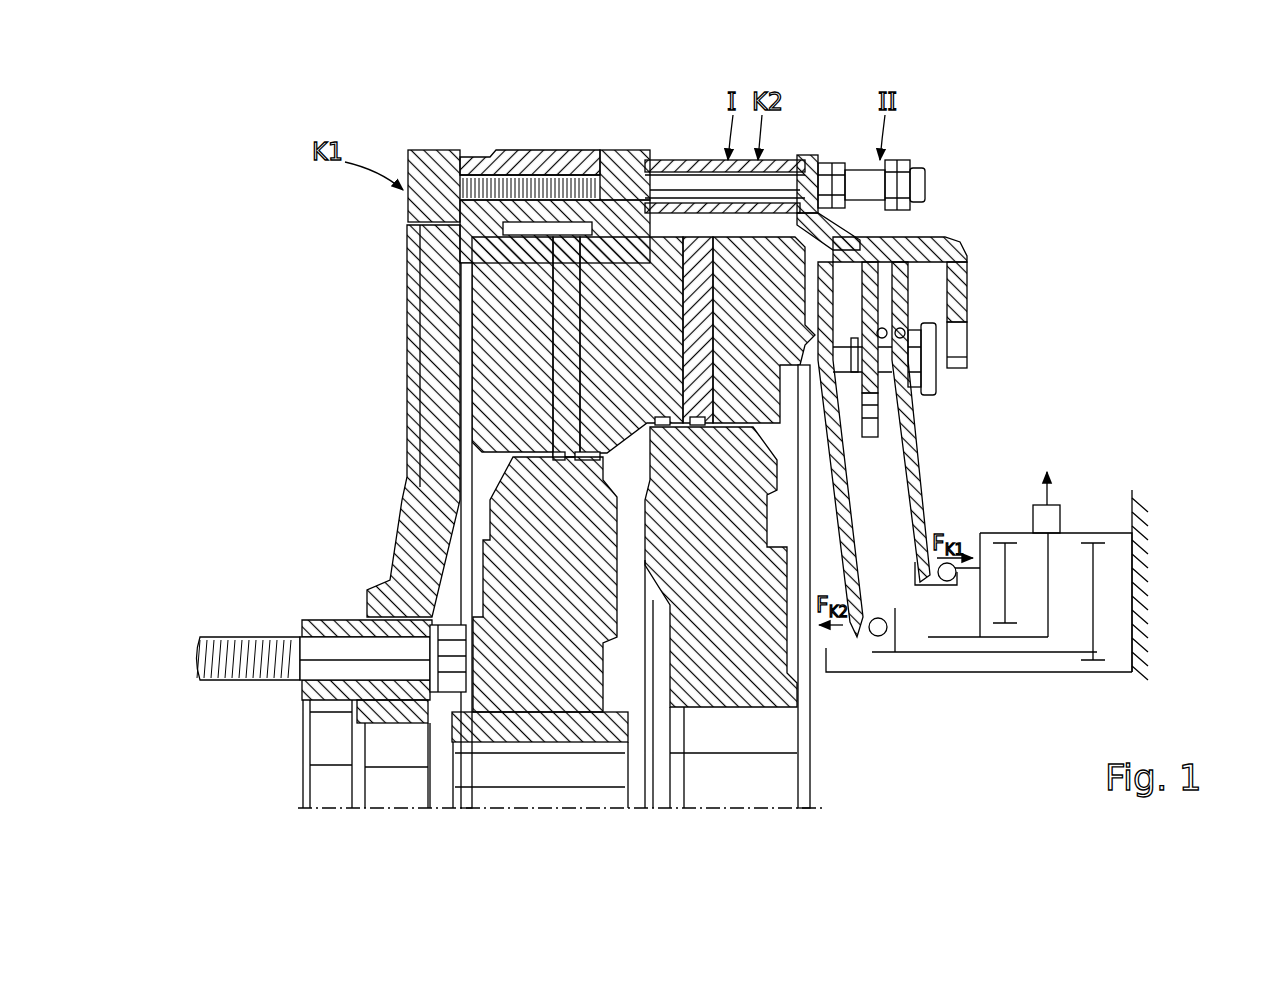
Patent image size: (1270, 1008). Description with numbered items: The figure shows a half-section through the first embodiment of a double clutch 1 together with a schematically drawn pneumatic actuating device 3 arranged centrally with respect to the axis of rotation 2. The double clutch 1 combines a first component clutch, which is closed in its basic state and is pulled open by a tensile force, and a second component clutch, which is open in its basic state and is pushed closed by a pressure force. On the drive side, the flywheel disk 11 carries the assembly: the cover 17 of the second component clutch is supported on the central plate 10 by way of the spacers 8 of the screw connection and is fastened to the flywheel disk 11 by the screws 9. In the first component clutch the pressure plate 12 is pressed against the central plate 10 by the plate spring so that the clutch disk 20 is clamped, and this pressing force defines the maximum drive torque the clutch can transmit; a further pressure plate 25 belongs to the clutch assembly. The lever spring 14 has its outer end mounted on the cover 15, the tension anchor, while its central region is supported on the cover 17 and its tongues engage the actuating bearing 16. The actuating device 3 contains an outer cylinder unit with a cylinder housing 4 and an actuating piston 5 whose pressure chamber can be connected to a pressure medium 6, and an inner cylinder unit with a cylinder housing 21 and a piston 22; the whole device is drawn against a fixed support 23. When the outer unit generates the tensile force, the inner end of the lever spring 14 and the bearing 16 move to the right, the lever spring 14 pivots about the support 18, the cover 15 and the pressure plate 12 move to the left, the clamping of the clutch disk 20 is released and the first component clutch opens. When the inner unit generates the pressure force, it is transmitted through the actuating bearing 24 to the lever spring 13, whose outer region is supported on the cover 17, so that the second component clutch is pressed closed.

The double clutch 1 is at (1082, 236).
The axis of rotation 2 is at (826, 808).
The actuating device 3 is at (1047, 438).
The cylinder housing 4 is at (1080, 533).
The actuating piston 5 is at (975, 575).
The pressure medium 6 is at (990, 530).
The spacer 8 is at (690, 162).
The screws 9 is at (785, 188).
The central plate 10 is at (617, 152).
The flywheel disk 11 is at (497, 152).
The pressure plate 12 is at (505, 352).
The lever spring 13 is at (853, 555).
The lever spring 14 is at (915, 440).
The clutch cover 15 is at (965, 298).
The actuating bearing 16 is at (930, 587).
The cover 17 is at (848, 236).
The support 18 is at (936, 350).
The clutch disk 20 is at (495, 548).
The cylinder housing 21 is at (1013, 640).
The piston 22 is at (1068, 656).
The fixed support 23 is at (1116, 528).
The actuating bearing 24 is at (884, 654).
The pressure plate 25 is at (817, 317).